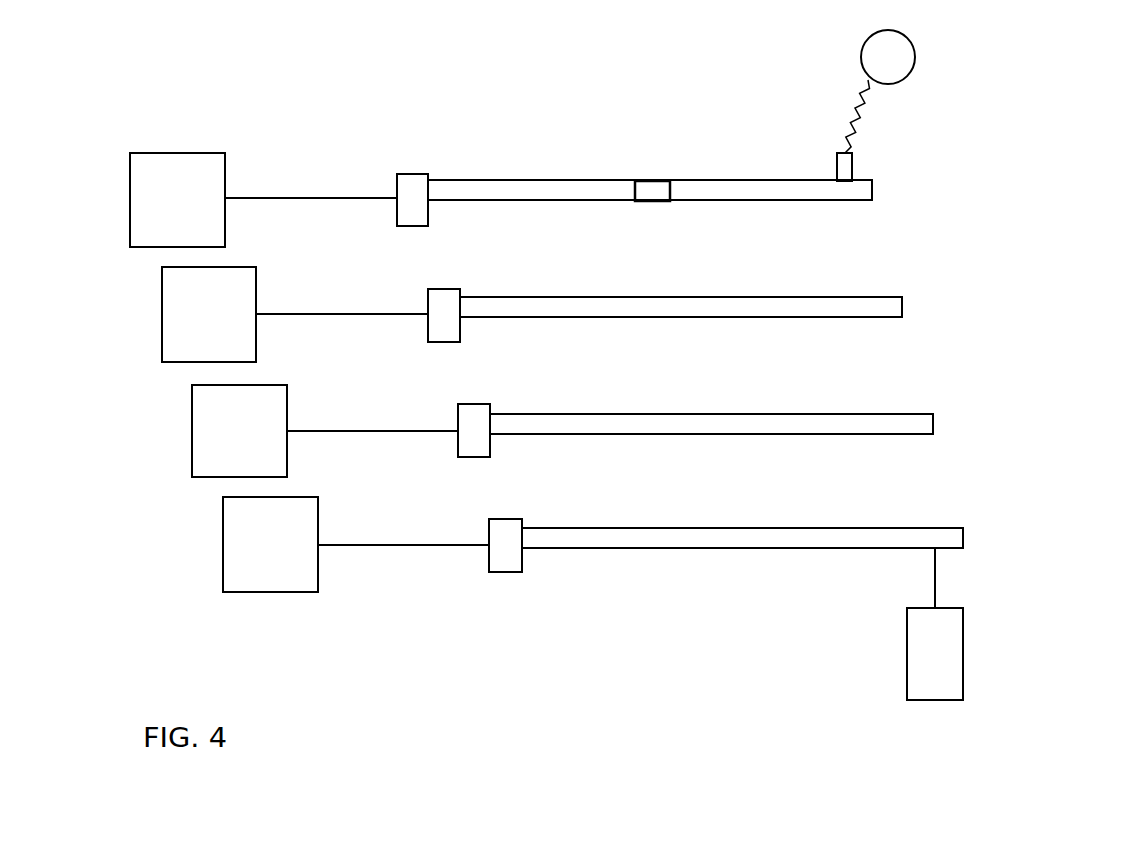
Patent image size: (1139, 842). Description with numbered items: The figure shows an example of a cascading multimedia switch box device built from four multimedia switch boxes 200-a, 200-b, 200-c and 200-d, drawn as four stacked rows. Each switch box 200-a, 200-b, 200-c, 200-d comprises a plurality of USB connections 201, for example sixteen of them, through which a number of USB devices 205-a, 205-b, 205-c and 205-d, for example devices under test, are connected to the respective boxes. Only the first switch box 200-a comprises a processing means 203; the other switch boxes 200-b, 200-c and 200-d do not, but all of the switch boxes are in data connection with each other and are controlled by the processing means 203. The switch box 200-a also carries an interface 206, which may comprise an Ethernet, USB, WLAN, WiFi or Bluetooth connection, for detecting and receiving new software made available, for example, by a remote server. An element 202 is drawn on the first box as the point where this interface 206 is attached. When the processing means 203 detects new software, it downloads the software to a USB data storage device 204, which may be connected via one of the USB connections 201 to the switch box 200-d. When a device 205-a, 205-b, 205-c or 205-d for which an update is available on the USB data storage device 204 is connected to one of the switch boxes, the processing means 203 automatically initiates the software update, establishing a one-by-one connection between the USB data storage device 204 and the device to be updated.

The multimedia switch box 200-a is at (627, 165).
The multimedia switch box 200-b is at (953, 312).
The multimedia switch box 200-c is at (985, 429).
The multimedia switch box 200-d is at (1015, 543).
The USB connection 201 is at (410, 173).
The sensor element 202 is at (836, 160).
The processing means 203 is at (646, 180).
The USB data storage device 204 is at (963, 648).
The USB device 205-a is at (207, 213).
The USB device 205-b is at (239, 327).
The USB device 205-c is at (269, 444).
The USB device 205-d is at (300, 558).
The interface 206 is at (915, 62).